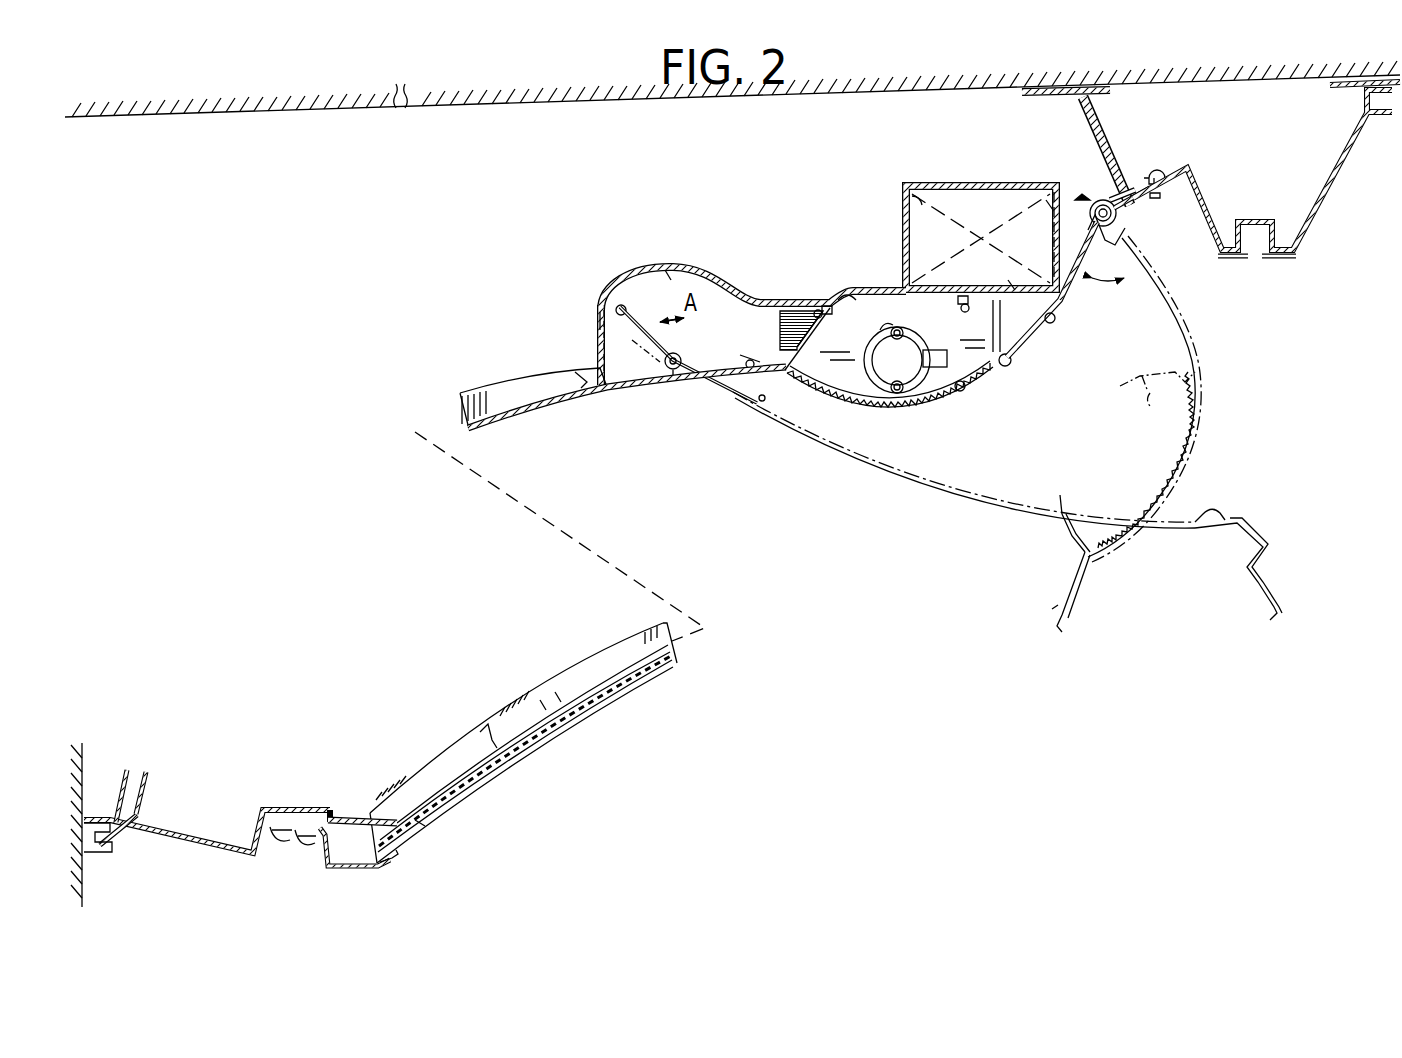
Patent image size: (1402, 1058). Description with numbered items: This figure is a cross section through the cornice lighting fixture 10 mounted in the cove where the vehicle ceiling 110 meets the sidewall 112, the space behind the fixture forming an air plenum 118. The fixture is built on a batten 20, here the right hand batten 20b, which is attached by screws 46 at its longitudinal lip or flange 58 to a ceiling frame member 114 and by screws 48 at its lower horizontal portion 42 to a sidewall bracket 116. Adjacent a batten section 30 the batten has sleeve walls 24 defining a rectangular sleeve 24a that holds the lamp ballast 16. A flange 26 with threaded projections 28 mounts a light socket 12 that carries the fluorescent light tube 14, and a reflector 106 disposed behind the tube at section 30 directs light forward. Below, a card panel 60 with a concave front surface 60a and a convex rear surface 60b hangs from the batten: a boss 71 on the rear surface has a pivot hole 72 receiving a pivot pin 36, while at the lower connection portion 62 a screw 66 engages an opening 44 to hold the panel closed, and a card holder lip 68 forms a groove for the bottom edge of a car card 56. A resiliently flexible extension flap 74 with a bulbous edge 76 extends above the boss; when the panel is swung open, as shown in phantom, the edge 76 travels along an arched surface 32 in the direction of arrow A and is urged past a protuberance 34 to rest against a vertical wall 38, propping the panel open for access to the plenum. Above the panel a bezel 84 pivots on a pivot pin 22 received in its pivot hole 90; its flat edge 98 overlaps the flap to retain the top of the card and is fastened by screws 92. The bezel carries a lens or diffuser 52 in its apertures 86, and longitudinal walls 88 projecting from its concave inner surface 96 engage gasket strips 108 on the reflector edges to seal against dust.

The lighting fixture 10 is at (405, 376).
The light socket 12 is at (889, 371).
The fluorescent light tube 14 is at (902, 385).
The lamp ballast 16 is at (1065, 209).
The batten 20 is at (523, 743).
The right hand batten 20b is at (531, 384).
The pivot pin or trunnion 22 is at (1102, 173).
The sleeve walls 24 is at (958, 230).
The rectangular sleeve 24a is at (1005, 173).
The flange 26 is at (885, 391).
The threaded projections or holes 28 is at (873, 292).
The batten section 30 is at (800, 304).
The arched surface 32 is at (656, 251).
The protuberance 34 is at (641, 305).
The pivot pin or trunnion 36 is at (656, 398).
The vertical wall 38 is at (579, 345).
The lower horizontal portion 42 is at (275, 788).
The opening 44 is at (362, 794).
The screws 46 is at (1131, 216).
The screws 48 is at (261, 864).
The lens or diffuser 52 is at (970, 410).
The car card 56 is at (444, 832).
The longitudinal lip or flange 58 is at (1136, 156).
The card panel 60 is at (830, 622).
The concave front surface 60a is at (533, 765).
The convex rear surface 60b is at (531, 678).
The connection portion 62 is at (355, 872).
The screw 66 is at (299, 866).
The card holder tab or lip 68 is at (407, 873).
The boss or projection 71 is at (653, 360).
The pivot hole 72 is at (688, 355).
The extension flap 74 is at (684, 348).
The bulbous edge 76 is at (679, 331).
The bezel 84 is at (1141, 392).
The apertures 86 is at (1022, 379).
The longitudinally extending walls 88 is at (1004, 404).
The pivot hole 90 is at (1120, 173).
The screws 92 is at (745, 422).
The concave inner surface 96 is at (1072, 318).
The flat edge 98 is at (800, 499).
The reflector 106 is at (829, 264).
The gasket strips 108 is at (882, 252).
The vehicle ceiling 110 is at (732, 111).
The sidewall 112 is at (106, 825).
The bracket or frame member 114 is at (1266, 169).
The bracket 116 is at (207, 811).
The air plenum or cove 118 is at (548, 464).